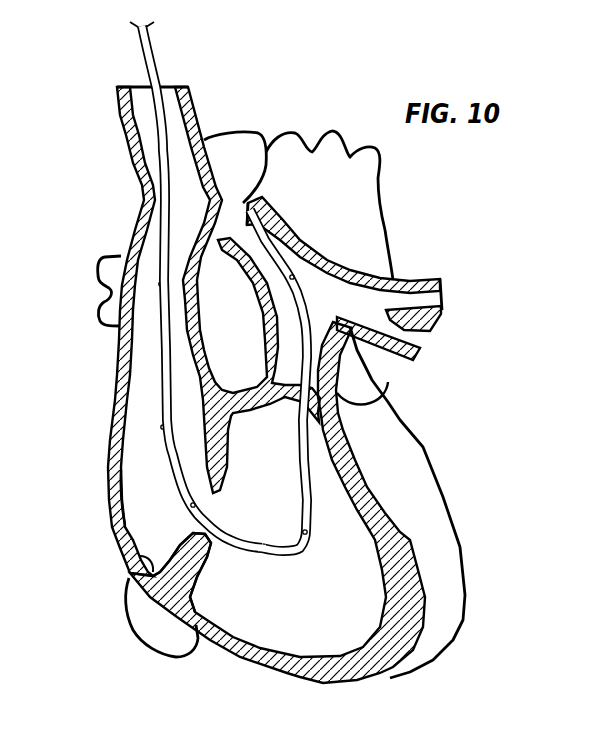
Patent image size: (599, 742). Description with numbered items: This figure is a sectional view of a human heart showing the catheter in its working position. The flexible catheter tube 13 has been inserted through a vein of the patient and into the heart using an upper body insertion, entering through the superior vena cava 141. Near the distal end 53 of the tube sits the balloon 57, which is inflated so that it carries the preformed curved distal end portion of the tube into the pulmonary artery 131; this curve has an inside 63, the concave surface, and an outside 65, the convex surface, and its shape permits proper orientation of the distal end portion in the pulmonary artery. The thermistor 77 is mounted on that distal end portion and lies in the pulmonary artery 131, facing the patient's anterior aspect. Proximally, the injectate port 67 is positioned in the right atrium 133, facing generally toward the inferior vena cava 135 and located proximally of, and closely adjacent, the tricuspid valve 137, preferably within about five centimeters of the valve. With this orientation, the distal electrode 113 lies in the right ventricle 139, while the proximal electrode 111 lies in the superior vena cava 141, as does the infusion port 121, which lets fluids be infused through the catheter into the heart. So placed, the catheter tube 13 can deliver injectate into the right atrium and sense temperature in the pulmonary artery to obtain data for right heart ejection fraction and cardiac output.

The catheter tube 13 is at (126, 59).
The distal end 53 is at (242, 209).
The balloon 57 is at (265, 212).
The inside of the curve 63 is at (288, 298).
The outside of the curve 65 is at (308, 295).
The injectate port 67 is at (192, 506).
The thermistor 77 is at (290, 279).
The proximal electrode 111 is at (160, 428).
The distal electrode 113 is at (307, 533).
The infusion port 121 is at (159, 286).
The pulmonary artery 131 is at (313, 283).
The right atrium 133 is at (140, 497).
The inferior vena cava 135 is at (145, 555).
The tricuspid valve 137 is at (210, 538).
The right ventricle 139 is at (280, 620).
The superior vena cava 141 is at (147, 351).